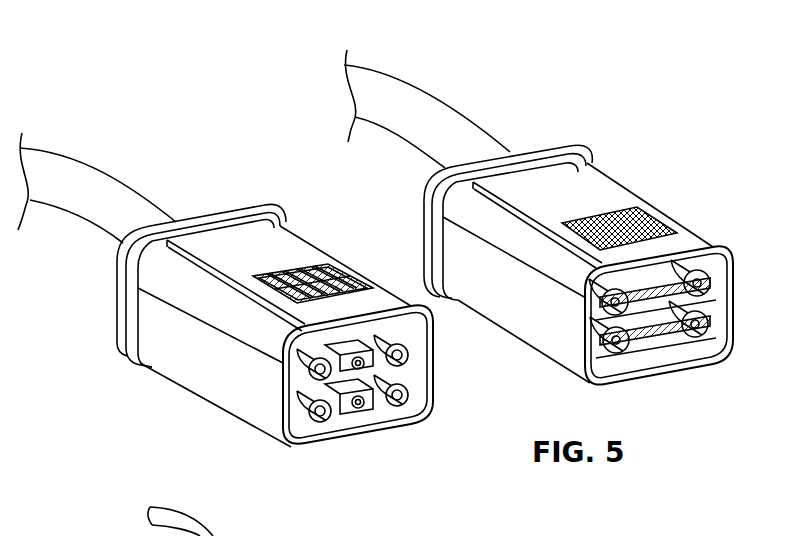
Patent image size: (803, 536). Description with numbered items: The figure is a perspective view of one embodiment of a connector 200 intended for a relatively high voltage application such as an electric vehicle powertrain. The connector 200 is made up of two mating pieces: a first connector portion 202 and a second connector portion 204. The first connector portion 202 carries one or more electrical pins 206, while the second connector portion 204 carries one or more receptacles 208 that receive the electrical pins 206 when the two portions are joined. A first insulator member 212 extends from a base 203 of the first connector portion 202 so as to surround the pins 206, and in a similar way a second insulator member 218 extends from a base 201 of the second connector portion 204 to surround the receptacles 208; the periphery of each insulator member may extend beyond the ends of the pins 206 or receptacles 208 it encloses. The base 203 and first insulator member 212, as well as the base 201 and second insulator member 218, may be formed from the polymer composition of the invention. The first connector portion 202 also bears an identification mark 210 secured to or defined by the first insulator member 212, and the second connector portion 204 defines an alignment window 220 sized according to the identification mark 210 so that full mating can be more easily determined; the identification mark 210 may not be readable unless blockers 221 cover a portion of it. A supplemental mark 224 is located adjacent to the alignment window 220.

The connector 200 is at (137, 66).
The base 201 is at (118, 352).
The first connector portion 202 is at (610, 168).
The base 203 is at (570, 146).
The second connector portion 204 is at (213, 366).
The electrical pins 206 is at (628, 352).
The receptacles 208 is at (409, 357).
The identification mark 210 is at (645, 215).
The first insulator member 212 is at (467, 205).
The second insulator member 218 is at (248, 395).
The alignment window 220 is at (362, 287).
The blockers 221 is at (317, 276).
The supplemental mark 224 is at (280, 276).